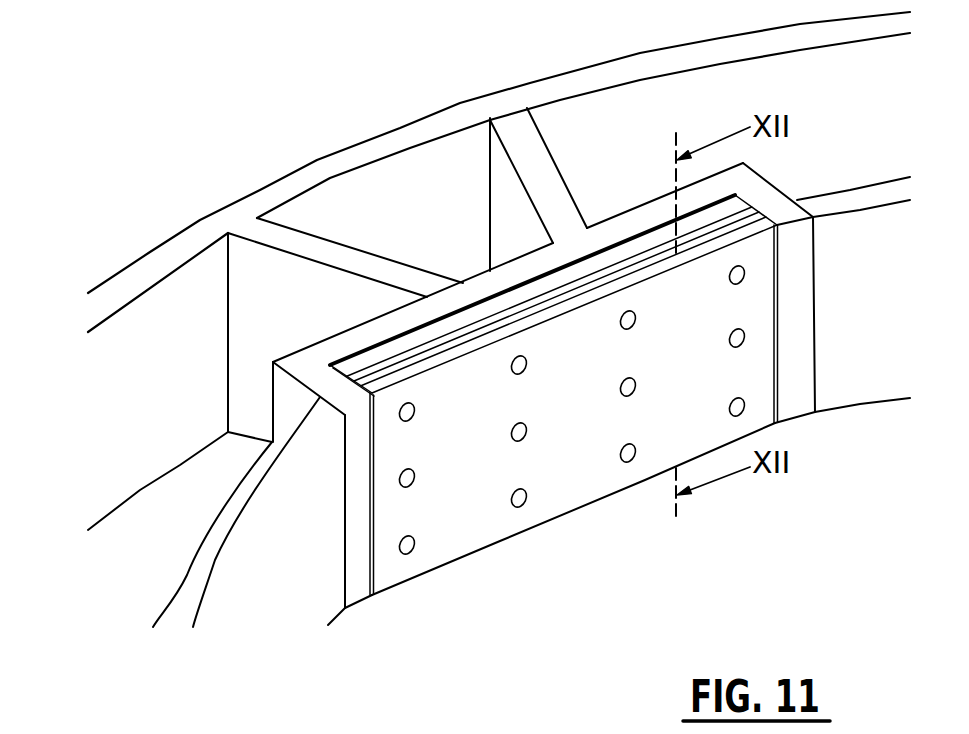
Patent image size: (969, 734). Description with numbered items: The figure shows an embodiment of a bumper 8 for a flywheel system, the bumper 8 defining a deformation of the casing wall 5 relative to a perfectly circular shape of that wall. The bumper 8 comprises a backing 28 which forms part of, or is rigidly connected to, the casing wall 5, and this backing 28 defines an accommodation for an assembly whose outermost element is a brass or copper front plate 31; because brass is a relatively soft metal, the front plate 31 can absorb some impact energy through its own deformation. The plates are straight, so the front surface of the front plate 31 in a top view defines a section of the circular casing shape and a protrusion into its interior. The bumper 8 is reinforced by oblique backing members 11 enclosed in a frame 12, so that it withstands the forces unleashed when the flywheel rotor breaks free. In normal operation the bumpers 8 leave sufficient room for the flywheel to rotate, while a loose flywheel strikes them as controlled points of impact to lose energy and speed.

The frame 12 is at (605, 72).
The oblique backing members 11 is at (525, 172).
The backing 28 is at (308, 357).
The front plate 31 is at (568, 477).
The bumper 8 is at (562, 565).
The casing wall 5 is at (283, 580).